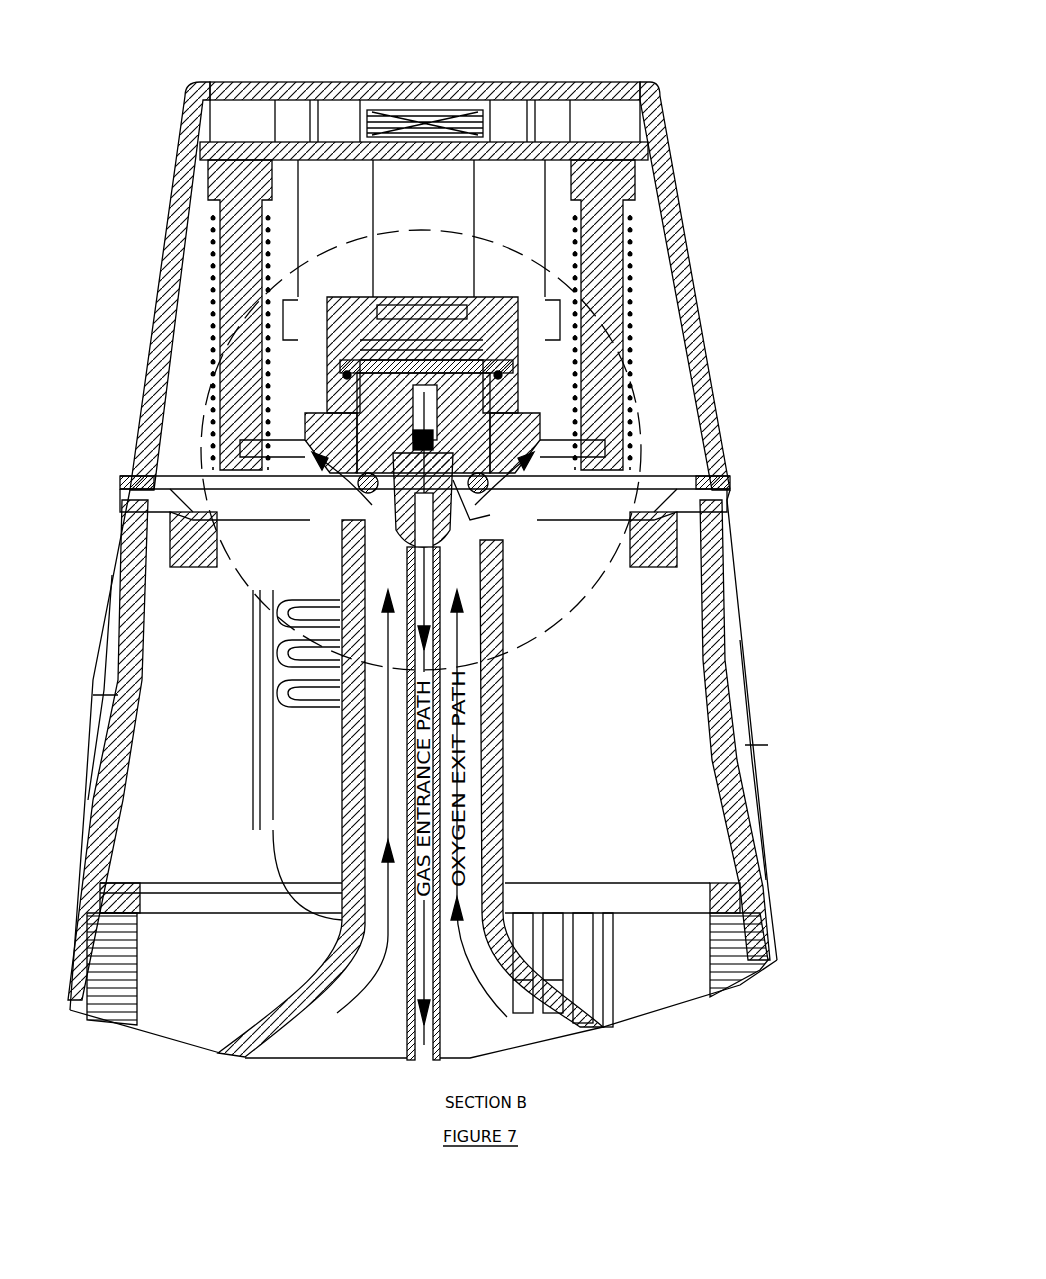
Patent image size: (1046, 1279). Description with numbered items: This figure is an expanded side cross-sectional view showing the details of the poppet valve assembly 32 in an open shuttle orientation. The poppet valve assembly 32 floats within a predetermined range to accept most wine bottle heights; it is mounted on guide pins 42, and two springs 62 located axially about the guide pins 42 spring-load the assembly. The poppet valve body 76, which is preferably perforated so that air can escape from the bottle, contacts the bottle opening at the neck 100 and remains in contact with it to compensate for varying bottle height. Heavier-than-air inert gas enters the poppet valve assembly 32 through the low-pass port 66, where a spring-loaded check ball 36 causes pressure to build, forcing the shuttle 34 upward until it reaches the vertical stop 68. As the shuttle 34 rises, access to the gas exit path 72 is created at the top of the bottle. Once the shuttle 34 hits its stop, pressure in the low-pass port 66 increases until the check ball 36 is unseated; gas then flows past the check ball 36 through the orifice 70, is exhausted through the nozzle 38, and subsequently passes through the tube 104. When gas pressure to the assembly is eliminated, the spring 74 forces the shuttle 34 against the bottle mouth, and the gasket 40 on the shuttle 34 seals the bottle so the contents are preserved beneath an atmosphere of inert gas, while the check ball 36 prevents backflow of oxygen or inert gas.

The poppet valve assembly 32 is at (643, 383).
The shuttle 34 is at (520, 416).
The check ball 36 is at (400, 358).
The nozzle 38 is at (453, 543).
The gasket 40 is at (490, 480).
The guide pins 42 is at (330, 330).
The springs 62 is at (214, 284).
The low-pass port 66 is at (480, 335).
The vertical stop 68 is at (505, 311).
The orifice 70 is at (460, 440).
The gas exit path 72 is at (472, 516).
The spring 74 is at (430, 350).
The poppet valve body 76 is at (323, 403).
The neck 100 is at (510, 748).
The tube 104 is at (445, 1022).